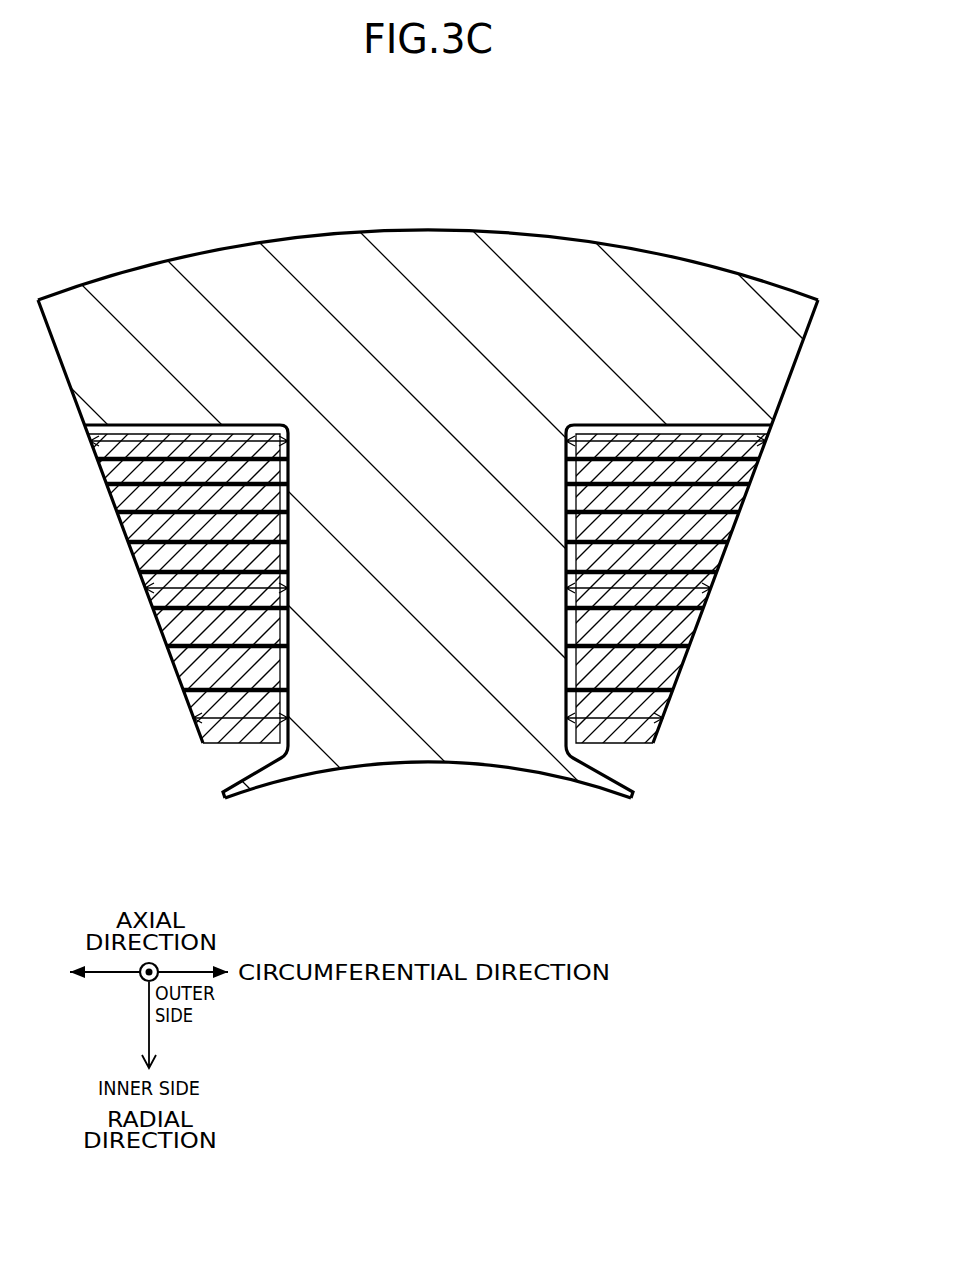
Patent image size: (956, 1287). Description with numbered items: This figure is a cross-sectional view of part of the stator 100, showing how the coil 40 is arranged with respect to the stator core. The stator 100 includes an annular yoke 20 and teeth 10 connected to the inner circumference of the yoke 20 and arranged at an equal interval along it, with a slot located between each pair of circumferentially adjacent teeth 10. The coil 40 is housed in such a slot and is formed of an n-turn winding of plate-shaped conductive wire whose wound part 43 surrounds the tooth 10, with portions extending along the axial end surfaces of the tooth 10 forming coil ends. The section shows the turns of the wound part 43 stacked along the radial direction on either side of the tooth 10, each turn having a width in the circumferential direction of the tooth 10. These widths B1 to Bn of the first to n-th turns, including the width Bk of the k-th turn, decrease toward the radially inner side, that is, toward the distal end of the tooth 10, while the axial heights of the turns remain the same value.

The stator 100 is at (478, 468).
The tooth 10 is at (478, 501).
The yoke 20 is at (442, 248).
The coil 40 is at (478, 590).
The wound part 43 is at (742, 539).
The width of first turn B1 is at (143, 445).
The width of k-th turn Bk is at (180, 588).
The width of n-th turn Bn is at (233, 720).